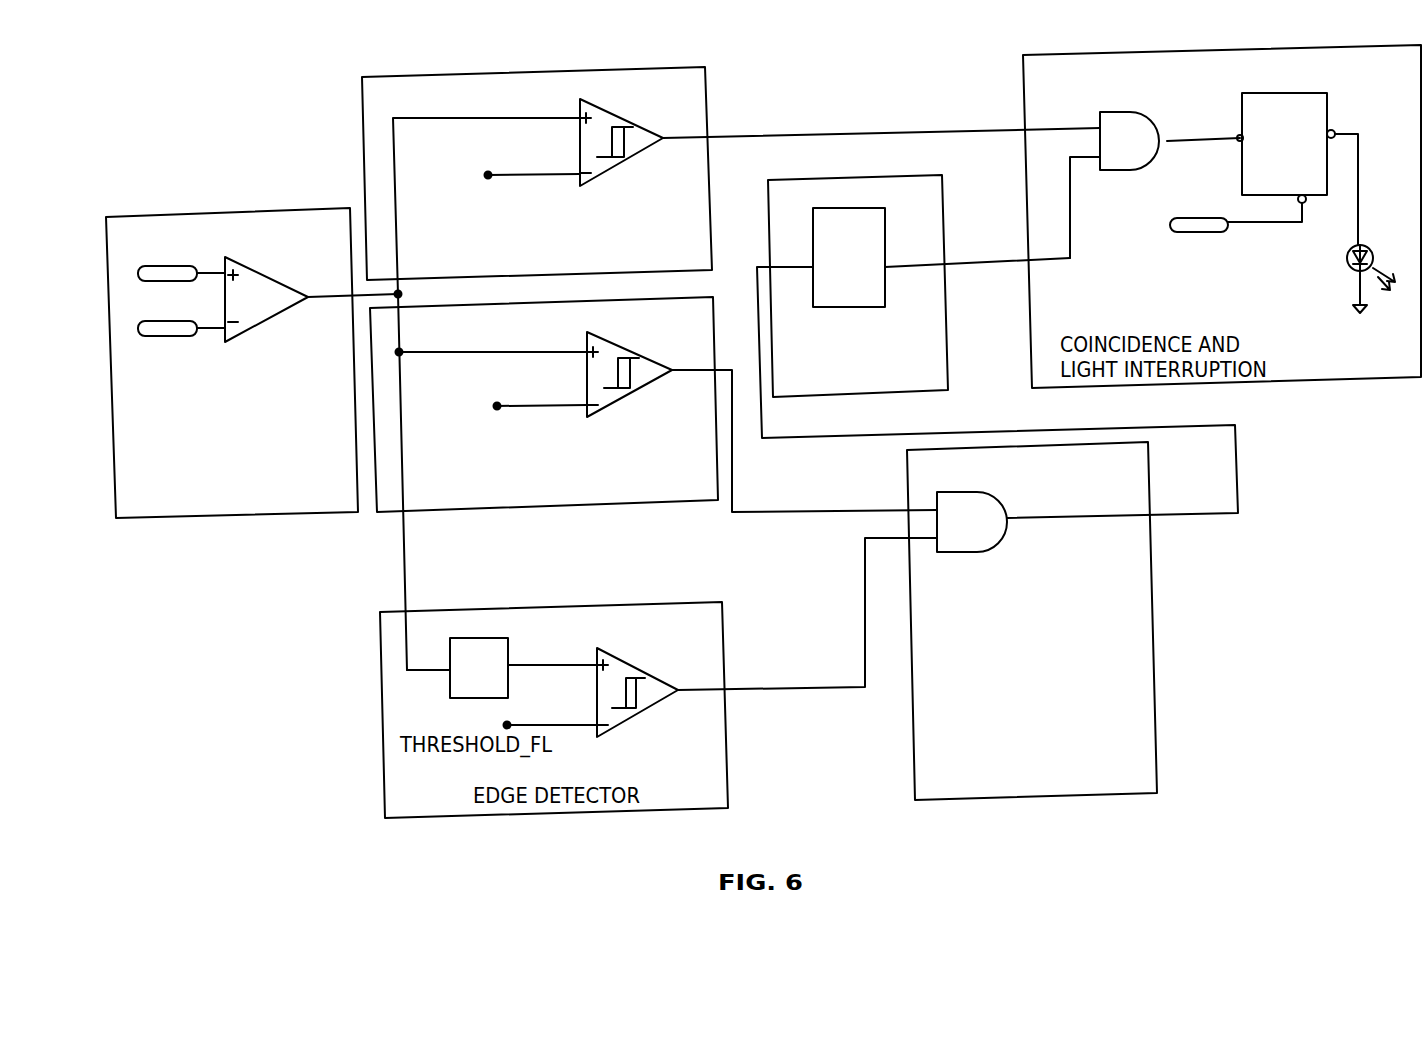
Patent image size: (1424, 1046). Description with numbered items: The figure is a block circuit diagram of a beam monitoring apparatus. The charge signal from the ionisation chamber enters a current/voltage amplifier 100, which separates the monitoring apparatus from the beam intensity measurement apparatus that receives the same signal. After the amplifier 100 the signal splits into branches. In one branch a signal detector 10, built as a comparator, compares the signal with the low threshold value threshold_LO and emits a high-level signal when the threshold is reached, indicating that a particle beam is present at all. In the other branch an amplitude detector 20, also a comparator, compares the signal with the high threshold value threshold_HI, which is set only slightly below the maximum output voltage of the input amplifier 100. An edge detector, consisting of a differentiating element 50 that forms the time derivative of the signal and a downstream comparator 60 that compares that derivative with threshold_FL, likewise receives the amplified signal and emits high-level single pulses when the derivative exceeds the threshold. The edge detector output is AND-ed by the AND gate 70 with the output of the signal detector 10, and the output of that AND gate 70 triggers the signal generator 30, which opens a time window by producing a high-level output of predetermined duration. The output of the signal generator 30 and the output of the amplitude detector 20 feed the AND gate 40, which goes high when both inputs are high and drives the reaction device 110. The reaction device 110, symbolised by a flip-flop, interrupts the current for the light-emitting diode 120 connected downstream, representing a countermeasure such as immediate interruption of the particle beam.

The current/voltage amplifier 100 is at (152, 212).
The amplitude detector 20 is at (710, 110).
The signal detector 10 is at (628, 505).
The signal generator 30 is at (767, 223).
The AND gate 40 is at (1155, 171).
The reaction device 110 is at (1266, 166).
The light-emitting diode 120 is at (1351, 223).
The differentiating element 50 is at (474, 662).
The comparator 60 is at (721, 637).
The AND gate 70 is at (1010, 550).